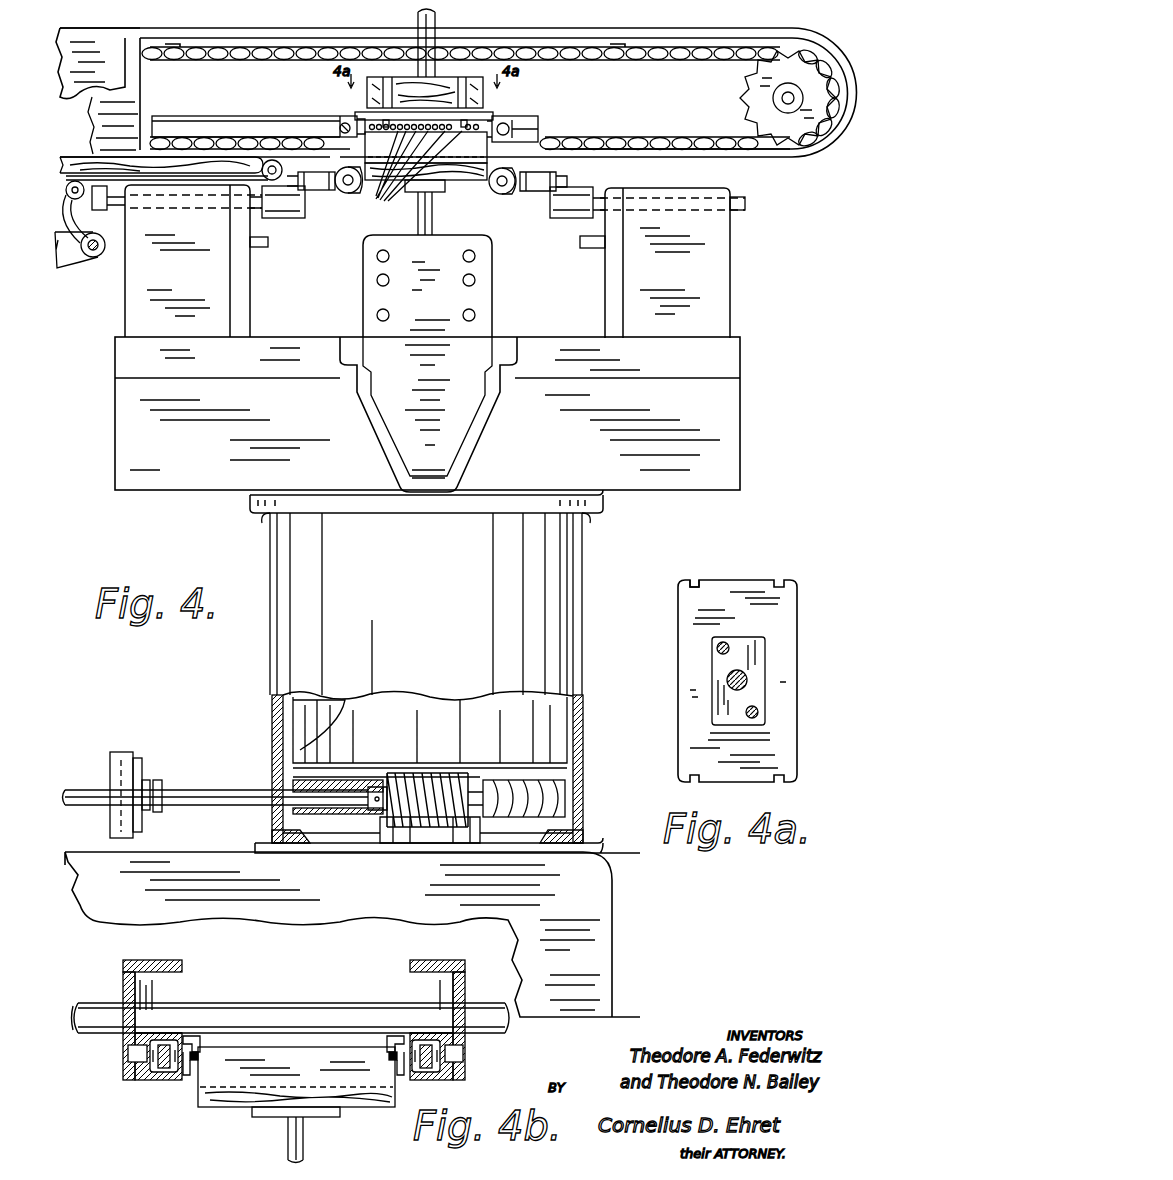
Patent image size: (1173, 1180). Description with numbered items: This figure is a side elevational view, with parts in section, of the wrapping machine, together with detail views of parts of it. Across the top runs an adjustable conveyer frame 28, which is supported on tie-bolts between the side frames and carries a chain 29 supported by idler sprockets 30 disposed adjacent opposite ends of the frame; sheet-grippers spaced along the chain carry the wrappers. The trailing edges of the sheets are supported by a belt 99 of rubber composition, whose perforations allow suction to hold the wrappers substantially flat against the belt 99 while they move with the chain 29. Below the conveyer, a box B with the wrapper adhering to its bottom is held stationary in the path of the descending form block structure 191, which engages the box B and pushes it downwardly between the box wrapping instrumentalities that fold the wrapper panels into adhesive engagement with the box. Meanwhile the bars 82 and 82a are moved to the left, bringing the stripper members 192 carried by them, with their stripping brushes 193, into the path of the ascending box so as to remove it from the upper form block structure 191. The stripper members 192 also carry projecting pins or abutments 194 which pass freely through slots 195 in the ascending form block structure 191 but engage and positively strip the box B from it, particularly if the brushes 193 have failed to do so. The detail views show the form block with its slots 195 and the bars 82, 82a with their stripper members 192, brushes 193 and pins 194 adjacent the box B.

In FIG. 4, the adjustable conveyer frame 28 is at (540, 33).
In FIG. 4, the chain 29 is at (602, 56).
In FIG. 4, the idler sprocket 30 is at (745, 102).
In FIG. 4, the bar 82 is at (228, 120).
In FIG. 4B, the bar 82 is at (123, 1060).
In FIG. 4B, the bar 82a is at (465, 1062).
In FIG. 4, the belt 99 is at (92, 216).
In FIG. 4, the form block structure 191 is at (437, 100).
In FIG. 4A, the form block structure 191 is at (688, 687).
In FIG. 4, the stripper member 192 is at (482, 130).
In FIG. 4B, the stripper member 192 is at (185, 1072).
In FIG. 4, the stripping brush 193 is at (376, 196).
In FIG. 4B, the stripping brush 193 is at (390, 1052).
In FIG. 4, the projecting pin 194 is at (383, 120).
In FIG. 4B, the projecting pin 194 is at (192, 1045).
In FIG. 4, the slot 195 is at (398, 80).
In FIG. 4A, the slot 195 is at (698, 580).
In FIG. 4B, the box B is at (288, 1070).